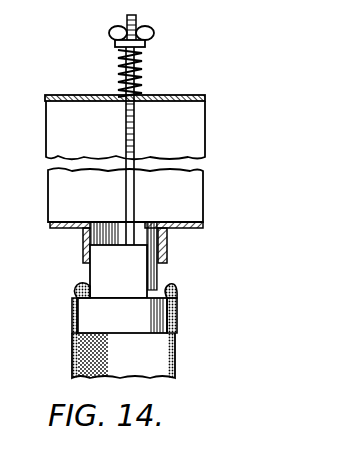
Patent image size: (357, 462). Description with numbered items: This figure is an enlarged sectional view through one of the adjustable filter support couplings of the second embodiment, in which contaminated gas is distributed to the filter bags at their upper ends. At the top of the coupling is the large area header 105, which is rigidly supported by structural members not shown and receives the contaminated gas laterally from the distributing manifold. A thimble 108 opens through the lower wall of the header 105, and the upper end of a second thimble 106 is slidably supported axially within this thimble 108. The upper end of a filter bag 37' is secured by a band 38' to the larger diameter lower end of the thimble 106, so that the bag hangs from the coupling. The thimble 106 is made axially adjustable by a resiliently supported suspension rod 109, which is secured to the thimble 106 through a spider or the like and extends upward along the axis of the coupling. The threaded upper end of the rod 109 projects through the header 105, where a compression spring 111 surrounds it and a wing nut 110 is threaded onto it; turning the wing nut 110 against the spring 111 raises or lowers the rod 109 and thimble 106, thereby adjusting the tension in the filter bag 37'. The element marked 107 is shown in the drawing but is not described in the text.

The header 105 is at (77, 95).
The suspension rod 109 is at (125, 193).
The thimble 108 is at (84, 253).
The block 107 is at (89, 280).
The wing nut 110 is at (150, 33).
The compression spring 111 is at (138, 65).
The band 38' is at (150, 308).
The filter bag 37' is at (147, 355).
The thimble 106 is at (123, 335).